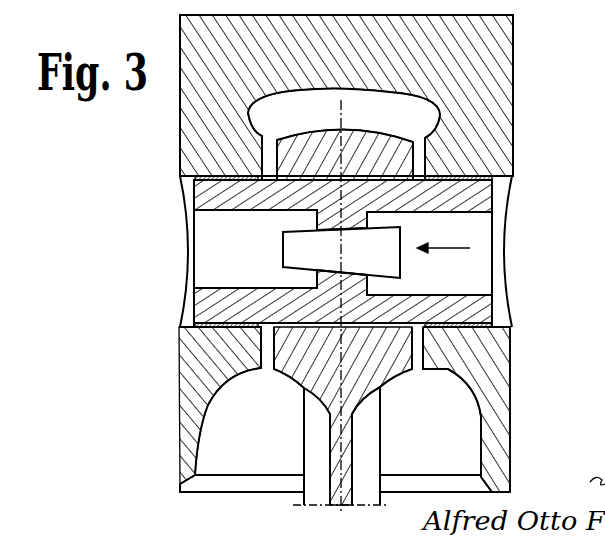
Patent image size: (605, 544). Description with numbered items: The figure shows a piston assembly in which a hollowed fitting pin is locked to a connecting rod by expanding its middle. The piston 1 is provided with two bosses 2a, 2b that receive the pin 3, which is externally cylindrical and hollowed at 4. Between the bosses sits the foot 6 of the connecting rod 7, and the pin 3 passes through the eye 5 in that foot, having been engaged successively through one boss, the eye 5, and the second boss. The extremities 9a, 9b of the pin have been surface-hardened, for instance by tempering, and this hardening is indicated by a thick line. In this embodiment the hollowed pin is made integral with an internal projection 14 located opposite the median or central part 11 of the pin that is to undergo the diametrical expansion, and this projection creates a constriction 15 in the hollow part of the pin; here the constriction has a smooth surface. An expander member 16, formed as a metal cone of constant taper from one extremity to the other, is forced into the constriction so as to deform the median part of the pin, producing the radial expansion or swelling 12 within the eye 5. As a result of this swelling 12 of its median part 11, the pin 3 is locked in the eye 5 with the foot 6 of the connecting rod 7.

The piston 1 is at (497, 37).
The boss 2a is at (212, 351).
The boss 2b is at (485, 363).
The pin 3 is at (228, 195).
The hollowed portion 4 is at (228, 228).
The eye 5 is at (279, 178).
The foot 6 is at (311, 360).
The connecting rod 7 is at (345, 488).
The extremity of the pin 9a is at (225, 322).
The extremity of the pin 9b is at (473, 325).
The central part of the pin 11 is at (357, 178).
The radial expansion 12 is at (391, 371).
The internal projection 14 is at (330, 220).
The constriction 15 is at (302, 286).
The expander member 16 is at (388, 265).